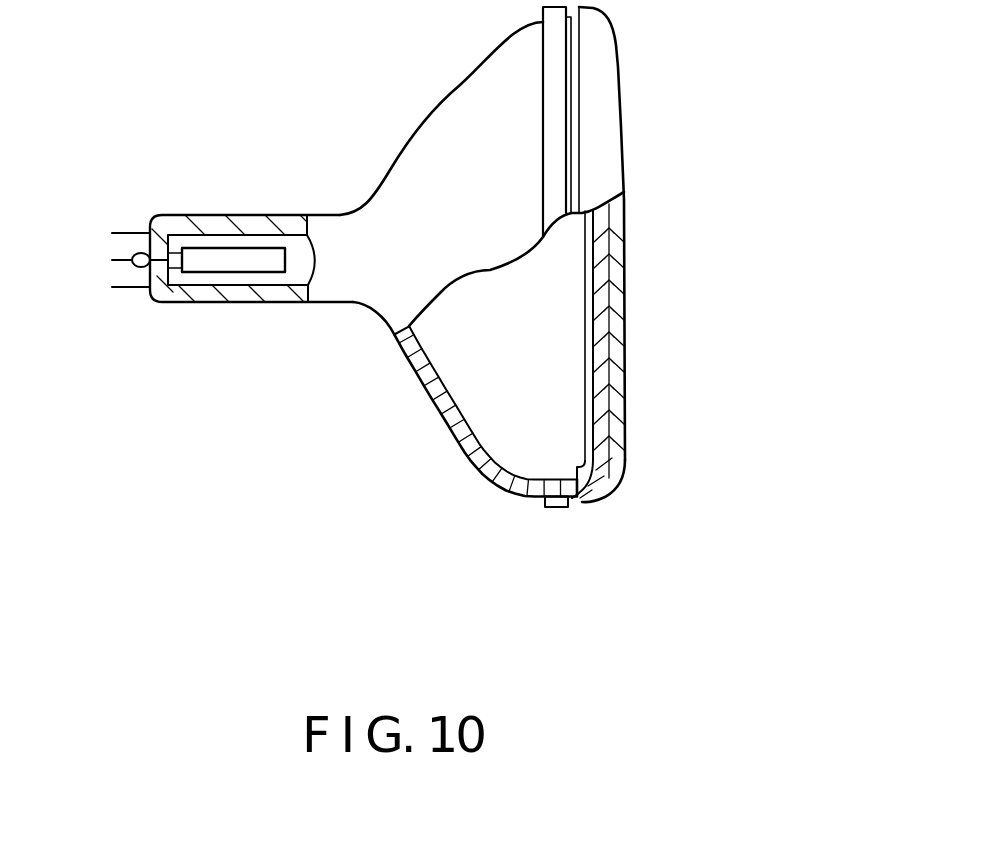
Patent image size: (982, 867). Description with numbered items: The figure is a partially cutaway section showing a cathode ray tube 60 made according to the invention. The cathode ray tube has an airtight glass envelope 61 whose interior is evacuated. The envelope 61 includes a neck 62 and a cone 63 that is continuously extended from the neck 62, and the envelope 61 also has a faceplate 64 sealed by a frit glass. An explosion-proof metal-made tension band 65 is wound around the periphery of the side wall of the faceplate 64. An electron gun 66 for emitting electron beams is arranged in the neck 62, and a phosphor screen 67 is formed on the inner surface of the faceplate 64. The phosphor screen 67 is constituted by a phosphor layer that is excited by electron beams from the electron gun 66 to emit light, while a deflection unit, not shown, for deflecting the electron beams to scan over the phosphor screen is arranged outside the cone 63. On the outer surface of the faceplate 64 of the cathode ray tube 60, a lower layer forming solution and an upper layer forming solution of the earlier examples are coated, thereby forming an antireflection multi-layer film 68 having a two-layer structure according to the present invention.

The cathode ray tube 60 is at (390, 398).
The airtight glass envelope 61 is at (351, 309).
The neck 62 is at (206, 217).
The cone 63 is at (412, 148).
The faceplate 64 is at (572, 485).
The tension band 65 is at (552, 507).
The electron gun 66 is at (193, 273).
The phosphor screen 67 is at (587, 282).
The antireflection multi-layer film 68 is at (608, 62).